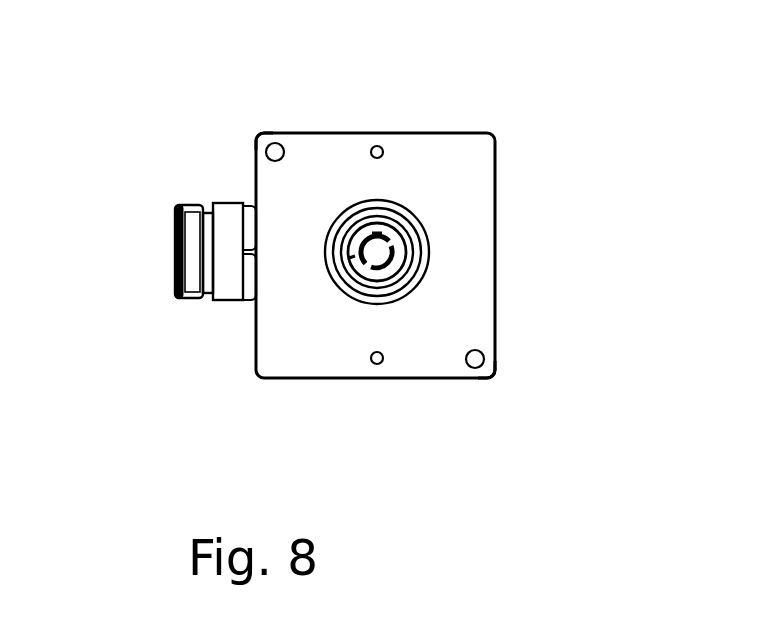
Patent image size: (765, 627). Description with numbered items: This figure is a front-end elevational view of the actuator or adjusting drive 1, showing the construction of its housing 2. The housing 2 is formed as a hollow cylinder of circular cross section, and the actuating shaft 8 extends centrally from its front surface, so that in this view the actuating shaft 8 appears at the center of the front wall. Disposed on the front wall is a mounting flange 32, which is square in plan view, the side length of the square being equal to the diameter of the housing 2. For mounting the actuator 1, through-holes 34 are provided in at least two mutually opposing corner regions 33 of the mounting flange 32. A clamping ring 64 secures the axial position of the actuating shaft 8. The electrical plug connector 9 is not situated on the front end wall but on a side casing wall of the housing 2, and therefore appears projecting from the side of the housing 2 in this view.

The actuator or adjusting drive 1 is at (518, 202).
The housing 2 is at (436, 122).
The actuating shaft 8 is at (381, 245).
The electrical plug connector 9 is at (174, 226).
The mounting flange 32 is at (477, 296).
The corner regions 33 is at (268, 172).
The through-holes 34 is at (275, 144).
The clamping ring 64 is at (352, 268).